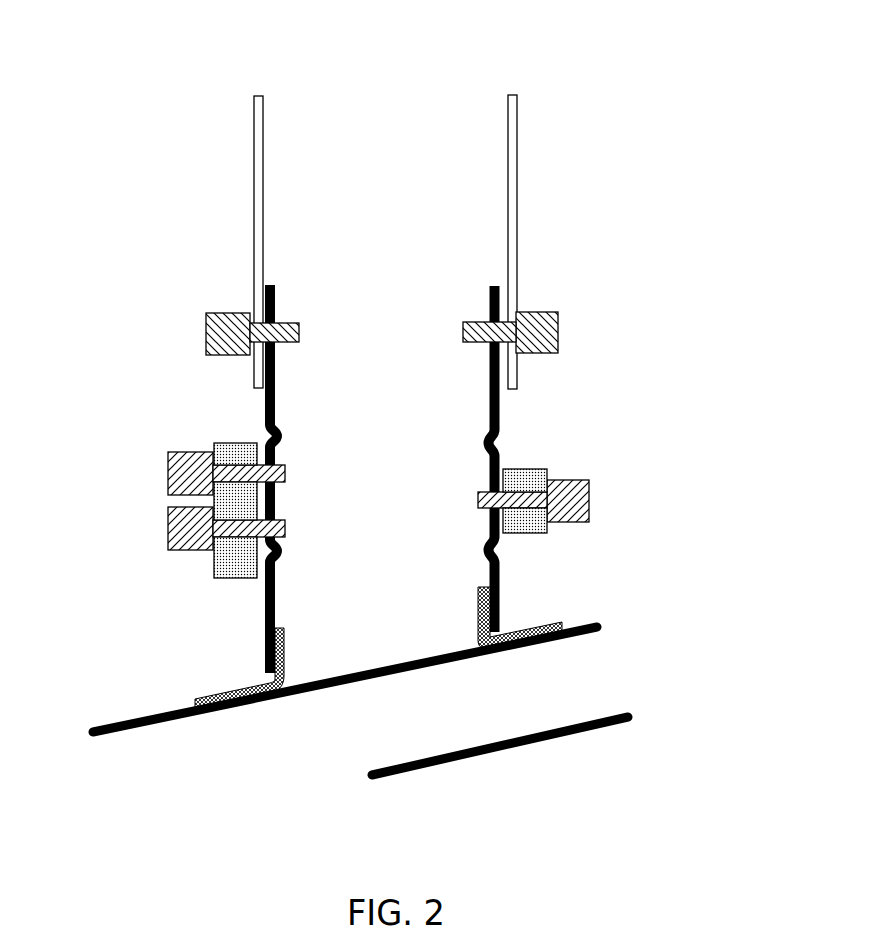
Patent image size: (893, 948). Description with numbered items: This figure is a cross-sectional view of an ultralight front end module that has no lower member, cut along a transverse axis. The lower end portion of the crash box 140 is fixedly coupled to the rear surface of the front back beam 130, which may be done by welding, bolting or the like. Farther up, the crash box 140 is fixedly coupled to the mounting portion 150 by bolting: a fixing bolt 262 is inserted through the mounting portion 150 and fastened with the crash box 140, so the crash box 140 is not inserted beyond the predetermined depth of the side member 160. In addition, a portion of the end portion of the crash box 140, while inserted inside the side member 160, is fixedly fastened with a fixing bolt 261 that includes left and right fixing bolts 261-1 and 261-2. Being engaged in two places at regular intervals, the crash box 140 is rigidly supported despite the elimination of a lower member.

The front back beam 130 is at (630, 718).
The crash box 140 is at (490, 577).
The mounting portion 150 is at (240, 456).
The side member 160 is at (510, 130).
The fixing bolt 261 is at (460, 254).
The left fixing bolt 261-1 is at (250, 319).
The right fixing bolt 261-2 is at (537, 313).
The fixing bolt 262 is at (183, 530).